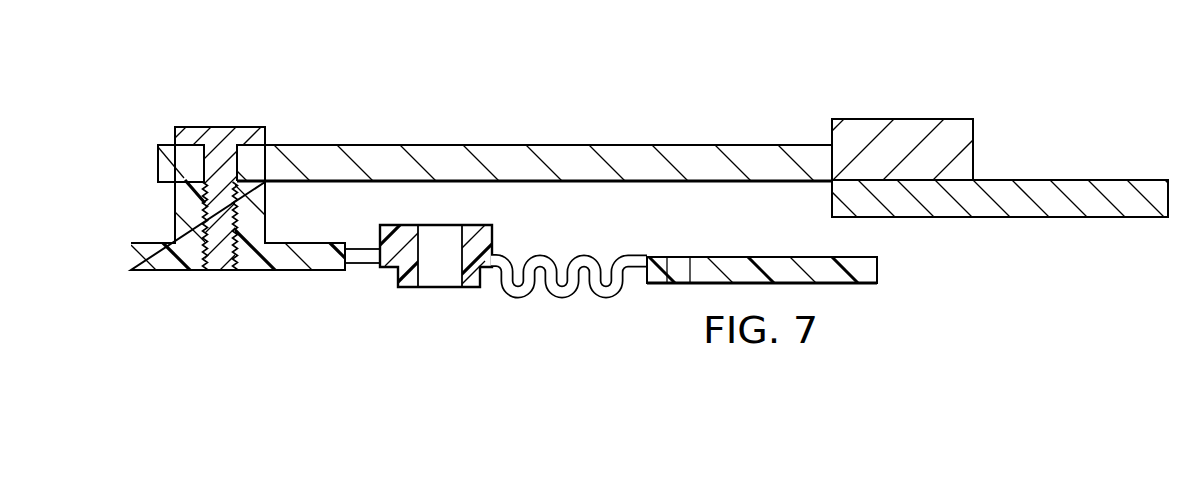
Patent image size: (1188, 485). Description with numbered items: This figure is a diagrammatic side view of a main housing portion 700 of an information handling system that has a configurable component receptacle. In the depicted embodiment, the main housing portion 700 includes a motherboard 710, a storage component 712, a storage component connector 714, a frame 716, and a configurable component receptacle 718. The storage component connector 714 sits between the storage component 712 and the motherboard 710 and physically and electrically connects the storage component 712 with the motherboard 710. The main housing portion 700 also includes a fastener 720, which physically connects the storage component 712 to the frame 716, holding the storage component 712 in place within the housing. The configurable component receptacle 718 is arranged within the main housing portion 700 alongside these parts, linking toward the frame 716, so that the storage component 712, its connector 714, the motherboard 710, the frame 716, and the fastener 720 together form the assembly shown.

The main housing portion 700 is at (750, 77).
The motherboard 710 is at (1095, 205).
The storage component 712 is at (507, 153).
The storage component connector 714 is at (912, 128).
The frame 716 is at (868, 270).
The configurable component receptacle 718 is at (499, 319).
The fastener 720 is at (214, 128).